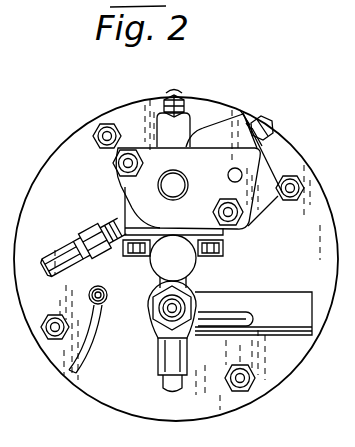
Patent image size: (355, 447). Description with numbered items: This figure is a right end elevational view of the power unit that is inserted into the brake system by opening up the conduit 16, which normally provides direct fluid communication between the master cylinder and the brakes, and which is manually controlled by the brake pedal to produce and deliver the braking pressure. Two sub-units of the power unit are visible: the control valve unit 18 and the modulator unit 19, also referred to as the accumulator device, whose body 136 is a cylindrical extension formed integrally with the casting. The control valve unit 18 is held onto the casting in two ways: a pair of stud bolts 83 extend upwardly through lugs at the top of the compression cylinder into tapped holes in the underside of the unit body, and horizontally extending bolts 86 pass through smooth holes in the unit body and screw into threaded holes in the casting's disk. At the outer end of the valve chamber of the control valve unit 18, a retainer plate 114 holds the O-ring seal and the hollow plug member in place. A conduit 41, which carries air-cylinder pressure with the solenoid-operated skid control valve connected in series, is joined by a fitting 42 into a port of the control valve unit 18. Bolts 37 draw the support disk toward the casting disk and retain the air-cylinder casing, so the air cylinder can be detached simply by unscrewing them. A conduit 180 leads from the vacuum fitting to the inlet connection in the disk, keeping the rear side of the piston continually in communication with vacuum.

The conduit 16 is at (219, 328).
The control valve unit 18 is at (215, 122).
The modulator unit 19 is at (280, 291).
The bolts 37 is at (256, 378).
The conduit 41 is at (58, 250).
The fitting 42 is at (98, 212).
The stud bolts 83 is at (133, 257).
The bolts 86 is at (112, 162).
The retainer plate 114 is at (220, 150).
The accumulator body 136 is at (187, 290).
The conduit 180 is at (90, 349).